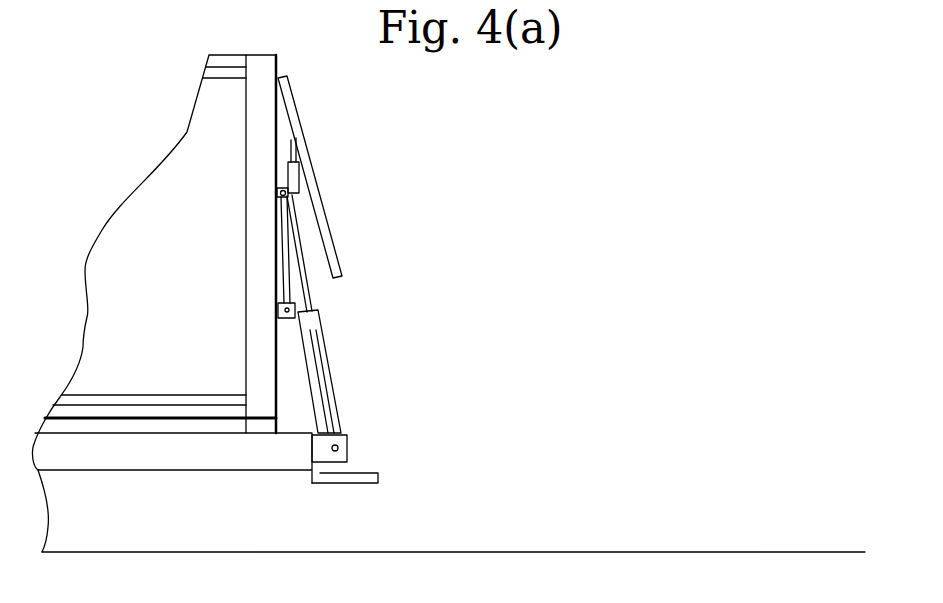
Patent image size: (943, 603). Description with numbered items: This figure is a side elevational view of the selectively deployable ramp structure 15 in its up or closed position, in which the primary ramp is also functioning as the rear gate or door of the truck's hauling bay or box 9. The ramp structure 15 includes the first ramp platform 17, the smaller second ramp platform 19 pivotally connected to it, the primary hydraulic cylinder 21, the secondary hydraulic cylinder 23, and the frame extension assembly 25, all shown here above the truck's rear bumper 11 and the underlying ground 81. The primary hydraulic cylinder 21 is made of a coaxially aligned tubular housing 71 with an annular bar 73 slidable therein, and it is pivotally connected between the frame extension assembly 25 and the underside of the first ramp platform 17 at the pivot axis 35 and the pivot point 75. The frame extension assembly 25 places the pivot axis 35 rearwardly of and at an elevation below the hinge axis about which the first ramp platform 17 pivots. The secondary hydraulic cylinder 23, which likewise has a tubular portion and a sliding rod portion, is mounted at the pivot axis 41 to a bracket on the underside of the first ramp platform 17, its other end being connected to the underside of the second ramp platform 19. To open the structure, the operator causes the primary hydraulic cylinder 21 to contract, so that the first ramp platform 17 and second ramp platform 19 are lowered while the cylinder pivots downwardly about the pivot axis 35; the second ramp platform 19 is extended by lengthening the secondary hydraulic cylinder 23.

The hauling bay or box 9 is at (198, 142).
The first ramp platform 17 is at (276, 133).
The second ramp platform 19 is at (331, 229).
The secondary hydraulic cylinder 23 is at (299, 176).
The pivot point 75 is at (280, 190).
The annular bar 73 is at (309, 292).
The pivot axis 41 is at (278, 306).
The primary hydraulic cylinder 21 is at (324, 347).
The tubular housing 71 is at (337, 393).
The pivot point/axis 35 is at (338, 448).
The frame extension assembly 25 is at (258, 461).
The rear bumper 11 is at (347, 484).
The floor 81 is at (571, 551).
The ramp structure 15 is at (484, 198).